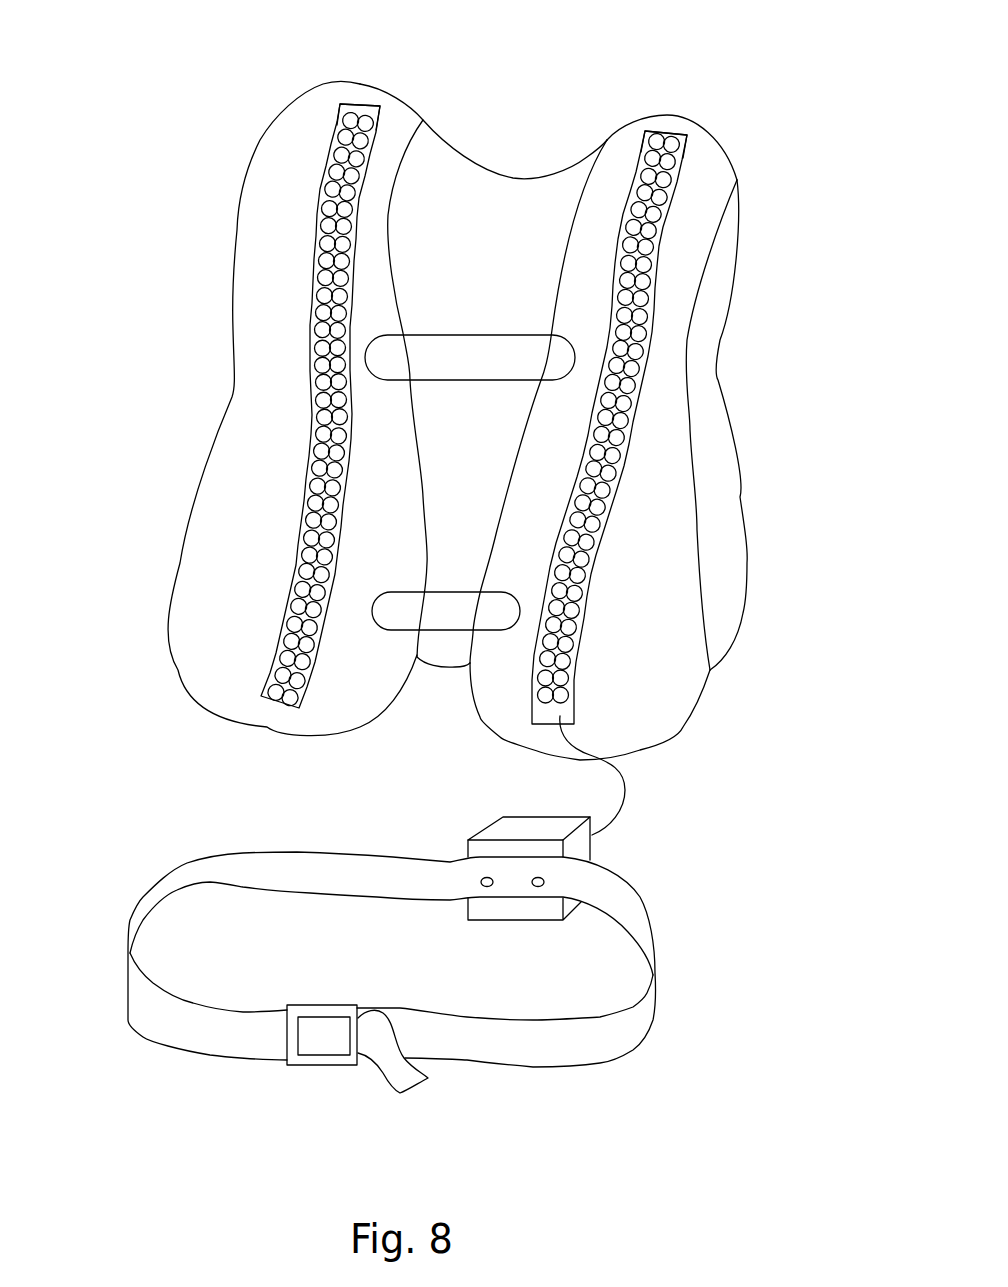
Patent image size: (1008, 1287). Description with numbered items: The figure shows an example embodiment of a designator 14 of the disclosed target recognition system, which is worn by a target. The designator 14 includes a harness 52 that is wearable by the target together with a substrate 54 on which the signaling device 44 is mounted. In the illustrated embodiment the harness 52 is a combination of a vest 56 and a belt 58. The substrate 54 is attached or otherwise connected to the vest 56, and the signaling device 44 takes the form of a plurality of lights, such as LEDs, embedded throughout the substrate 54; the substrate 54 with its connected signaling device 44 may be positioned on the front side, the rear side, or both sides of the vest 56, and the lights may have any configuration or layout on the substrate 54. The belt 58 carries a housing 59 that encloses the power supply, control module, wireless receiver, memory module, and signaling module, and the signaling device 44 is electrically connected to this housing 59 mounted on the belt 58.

The designator 14 is at (501, 419).
The signaling device 44 is at (310, 378).
The substrate 54 is at (361, 102).
The vest 56 is at (655, 437).
The harness 52 is at (396, 938).
The belt 58 is at (657, 925).
The housing 59 is at (503, 815).